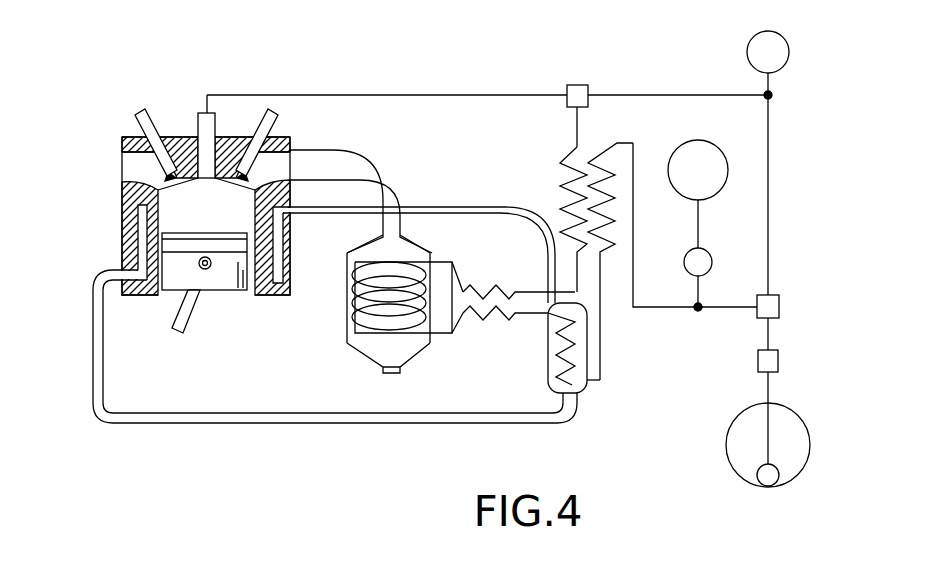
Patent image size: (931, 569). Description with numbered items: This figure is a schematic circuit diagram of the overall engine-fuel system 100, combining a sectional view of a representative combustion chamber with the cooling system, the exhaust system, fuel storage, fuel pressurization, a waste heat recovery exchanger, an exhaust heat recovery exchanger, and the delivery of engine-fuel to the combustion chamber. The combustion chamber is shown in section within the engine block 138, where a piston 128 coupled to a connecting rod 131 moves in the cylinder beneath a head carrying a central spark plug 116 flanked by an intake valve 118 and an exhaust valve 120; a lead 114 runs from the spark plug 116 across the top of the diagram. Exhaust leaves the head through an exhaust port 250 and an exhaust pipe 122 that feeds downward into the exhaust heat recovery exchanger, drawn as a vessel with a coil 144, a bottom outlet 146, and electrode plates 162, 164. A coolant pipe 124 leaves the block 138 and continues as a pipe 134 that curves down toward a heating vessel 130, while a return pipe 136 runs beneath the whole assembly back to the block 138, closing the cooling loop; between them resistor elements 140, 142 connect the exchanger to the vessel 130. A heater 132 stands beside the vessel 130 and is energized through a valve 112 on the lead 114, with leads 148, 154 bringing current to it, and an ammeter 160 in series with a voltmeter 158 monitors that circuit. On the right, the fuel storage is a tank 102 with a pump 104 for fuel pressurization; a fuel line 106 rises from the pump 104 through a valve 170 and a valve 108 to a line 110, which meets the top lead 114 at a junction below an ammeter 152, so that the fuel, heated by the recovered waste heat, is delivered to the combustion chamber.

The engine system 100 is at (360, 439).
The fuel tank 102 is at (745, 432).
The fuel pump 104 is at (782, 470).
The fuel line 106 is at (770, 390).
The valve 108 is at (780, 305).
The fuel line 110 is at (769, 178).
The valve 112 is at (580, 85).
The electrical lead 114 is at (248, 96).
The spark plug 116 is at (200, 112).
The intake valve 118 is at (140, 124).
The exhaust valve 120 is at (274, 110).
The exhaust pipe 122 is at (372, 181).
The coolant pipe 124 is at (284, 233).
The piston 128 is at (223, 291).
The fuel heating vessel 130 is at (545, 370).
The connecting rod 131 is at (176, 332).
The heater 132 is at (608, 150).
The pipe 134 is at (482, 204).
The return pipe 136 is at (247, 424).
The engine block 138 is at (123, 223).
The resistor 140 is at (509, 287).
The resistor 142 is at (506, 312).
The coil 144 is at (350, 318).
The vessel outlet 146 is at (380, 371).
The electrical lead 148 is at (572, 127).
The ammeter 152 is at (785, 62).
The electrical lead 154 is at (560, 178).
The voltmeter 158 is at (712, 258).
The ammeter 160 is at (710, 160).
The electrode plate 162 is at (446, 332).
The electrode plate 164 is at (447, 262).
The valve 170 is at (779, 358).
The exhaust port 250 is at (305, 168).